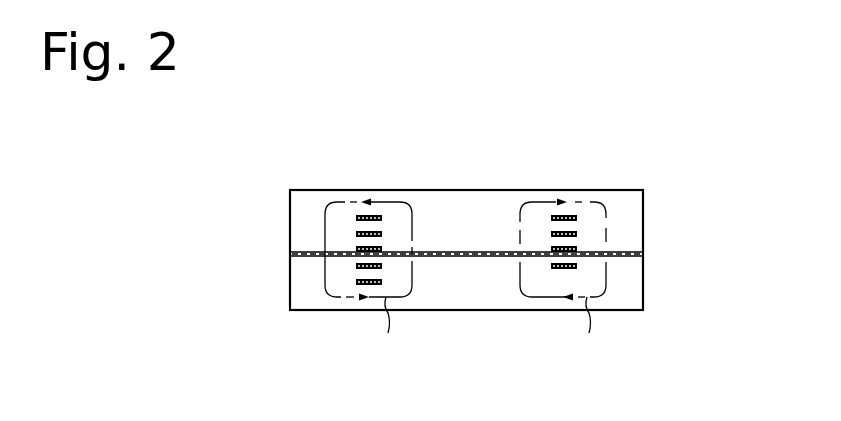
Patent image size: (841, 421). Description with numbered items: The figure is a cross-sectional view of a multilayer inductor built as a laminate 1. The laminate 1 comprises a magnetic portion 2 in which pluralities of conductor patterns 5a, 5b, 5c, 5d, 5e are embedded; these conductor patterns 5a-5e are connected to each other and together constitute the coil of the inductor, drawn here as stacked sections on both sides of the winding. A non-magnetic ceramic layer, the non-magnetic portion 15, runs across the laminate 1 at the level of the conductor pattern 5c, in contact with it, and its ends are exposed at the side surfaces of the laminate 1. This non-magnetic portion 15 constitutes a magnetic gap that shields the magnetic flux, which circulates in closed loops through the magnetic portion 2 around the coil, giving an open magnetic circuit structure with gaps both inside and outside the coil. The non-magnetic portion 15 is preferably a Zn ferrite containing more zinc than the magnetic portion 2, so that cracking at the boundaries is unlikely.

The laminate 1 is at (549, 169).
The magnetic portion 2 is at (636, 209).
The non-magnetic portion 15 is at (628, 255).
The conductor pattern 5a is at (356, 283).
The conductor pattern 5b is at (356, 266).
The conductor pattern 5c is at (356, 250).
The conductor pattern 5d is at (356, 233).
The conductor pattern 5e is at (356, 217).